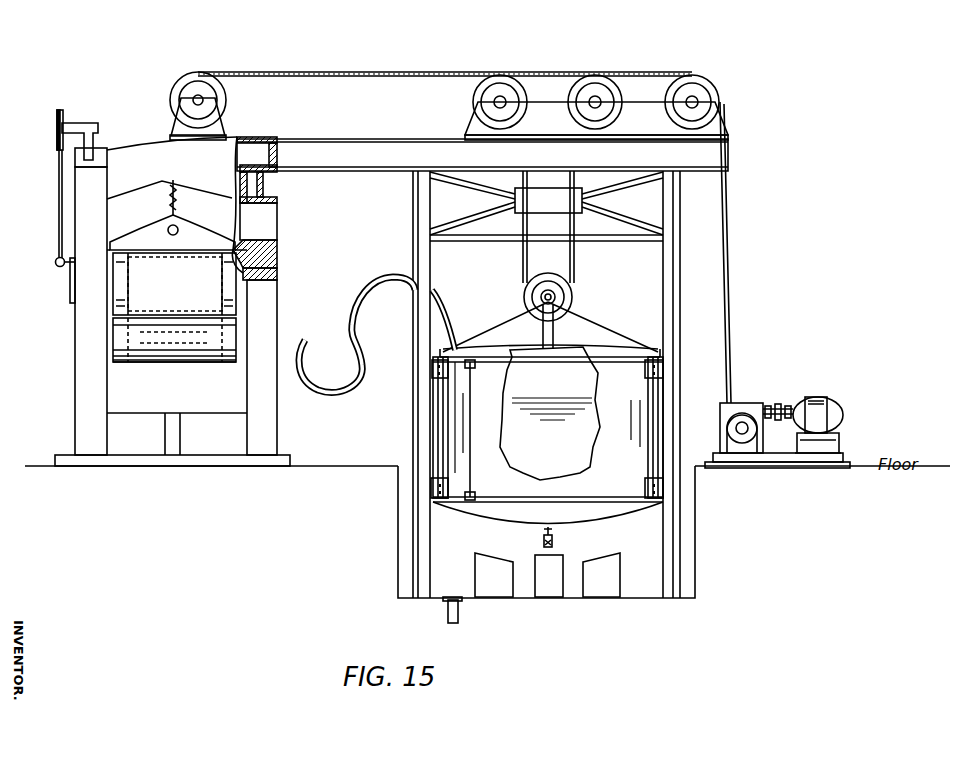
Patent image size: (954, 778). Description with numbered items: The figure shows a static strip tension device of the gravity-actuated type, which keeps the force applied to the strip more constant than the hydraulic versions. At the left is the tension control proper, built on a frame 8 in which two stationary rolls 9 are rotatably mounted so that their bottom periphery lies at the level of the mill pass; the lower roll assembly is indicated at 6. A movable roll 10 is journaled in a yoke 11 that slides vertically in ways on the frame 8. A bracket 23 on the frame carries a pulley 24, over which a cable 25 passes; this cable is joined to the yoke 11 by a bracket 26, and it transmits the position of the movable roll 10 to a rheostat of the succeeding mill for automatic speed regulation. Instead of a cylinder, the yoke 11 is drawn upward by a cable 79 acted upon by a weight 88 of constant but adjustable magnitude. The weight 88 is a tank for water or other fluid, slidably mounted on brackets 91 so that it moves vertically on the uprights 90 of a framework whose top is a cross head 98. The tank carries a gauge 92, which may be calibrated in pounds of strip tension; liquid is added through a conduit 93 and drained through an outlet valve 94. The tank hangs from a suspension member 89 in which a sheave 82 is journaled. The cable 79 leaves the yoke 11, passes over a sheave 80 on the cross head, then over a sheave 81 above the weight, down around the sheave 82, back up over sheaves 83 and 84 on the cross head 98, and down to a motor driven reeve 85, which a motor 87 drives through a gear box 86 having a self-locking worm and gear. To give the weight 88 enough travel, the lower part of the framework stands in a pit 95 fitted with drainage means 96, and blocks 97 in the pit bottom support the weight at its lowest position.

The roll frame bottom 6 is at (208, 364).
The frame 8 is at (283, 215).
The stationary rolls 9 is at (174, 340).
The movable roll 10 is at (174, 284).
The yoke 11 is at (172, 215).
The bracket 23 is at (96, 150).
The pulley 24 is at (63, 121).
The cable 25 is at (59, 220).
The bracket 26 is at (56, 266).
The cable 79 is at (388, 73).
The sheave 80 is at (228, 97).
The sheave 81 is at (596, 94).
The sheave 82 is at (574, 292).
The sheave 83 is at (588, 73).
The sheave 84 is at (717, 62).
The motor driven reeve 85 is at (730, 430).
The gear box 86 is at (755, 405).
The motor 87 is at (813, 414).
The weight 88 is at (573, 413).
The suspension member 89 is at (590, 325).
The uprights 90 is at (432, 424).
The brackets 91 is at (645, 488).
The gauge 92 is at (475, 423).
The conduit 93 is at (357, 316).
The outlet valve 94 is at (543, 538).
The pit 95 is at (684, 546).
The drainage means 96 is at (449, 613).
The blocks 97 is at (547, 575).
The cross head 98 is at (482, 368).